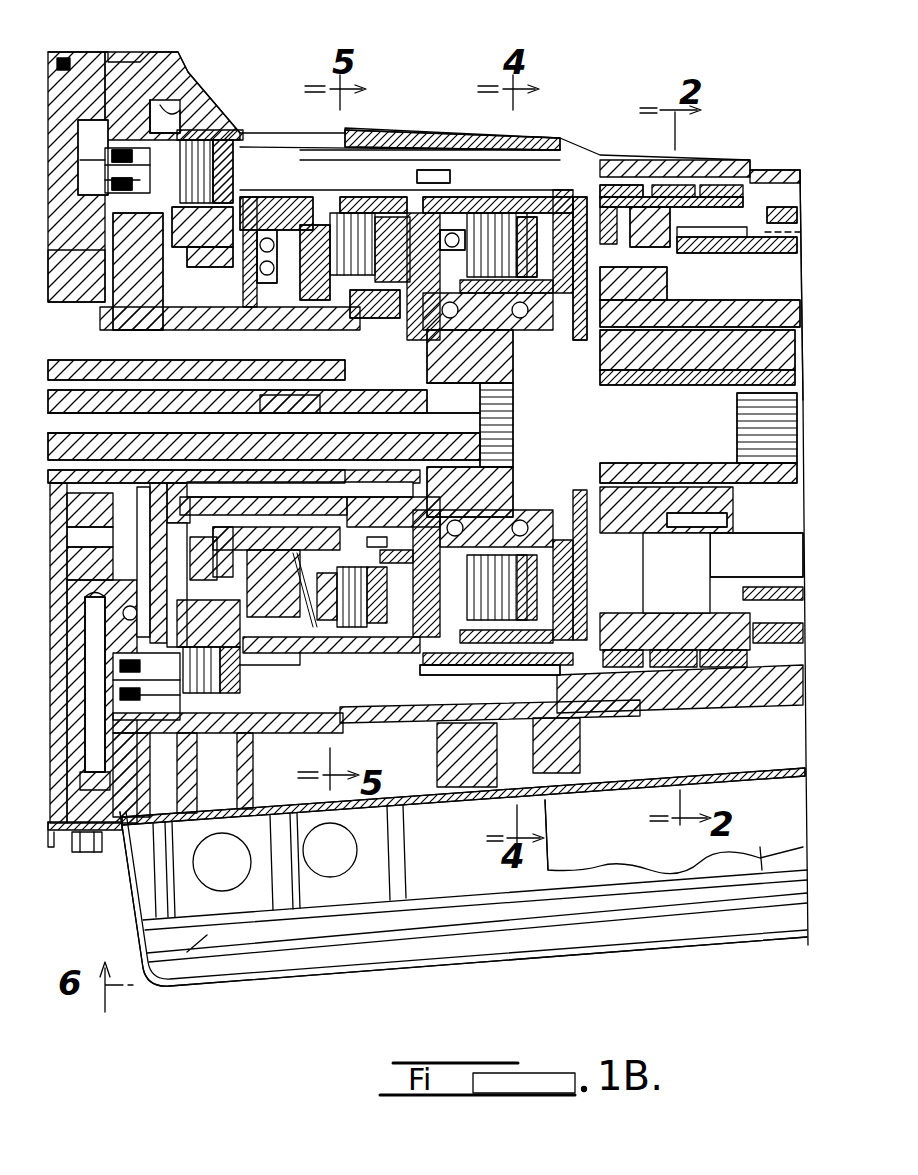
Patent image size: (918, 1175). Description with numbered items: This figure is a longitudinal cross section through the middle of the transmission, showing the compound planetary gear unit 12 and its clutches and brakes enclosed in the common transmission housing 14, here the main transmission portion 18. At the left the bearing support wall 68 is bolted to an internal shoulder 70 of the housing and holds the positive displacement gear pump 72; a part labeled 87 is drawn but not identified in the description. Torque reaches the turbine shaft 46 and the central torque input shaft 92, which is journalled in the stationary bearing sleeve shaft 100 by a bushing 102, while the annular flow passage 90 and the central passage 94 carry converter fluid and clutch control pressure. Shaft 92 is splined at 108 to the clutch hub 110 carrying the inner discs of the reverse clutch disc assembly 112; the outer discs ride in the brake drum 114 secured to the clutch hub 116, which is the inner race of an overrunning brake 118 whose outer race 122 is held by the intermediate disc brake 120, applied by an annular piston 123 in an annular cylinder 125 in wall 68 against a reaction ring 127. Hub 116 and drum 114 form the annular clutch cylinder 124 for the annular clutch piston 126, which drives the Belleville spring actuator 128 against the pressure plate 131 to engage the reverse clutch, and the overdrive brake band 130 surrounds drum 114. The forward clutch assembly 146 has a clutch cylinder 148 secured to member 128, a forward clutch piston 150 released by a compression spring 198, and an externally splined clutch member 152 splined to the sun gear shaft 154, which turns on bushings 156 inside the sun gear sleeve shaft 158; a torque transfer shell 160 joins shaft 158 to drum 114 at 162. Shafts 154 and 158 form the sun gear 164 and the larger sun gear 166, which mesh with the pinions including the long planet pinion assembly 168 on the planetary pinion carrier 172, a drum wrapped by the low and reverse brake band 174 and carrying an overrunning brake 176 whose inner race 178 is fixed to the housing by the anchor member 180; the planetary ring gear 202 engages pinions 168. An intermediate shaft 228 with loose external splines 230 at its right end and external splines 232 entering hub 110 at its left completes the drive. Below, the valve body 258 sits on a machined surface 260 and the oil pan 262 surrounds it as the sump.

The compound planetary gear unit 12 is at (765, 205).
The transmission housing 14 is at (403, 127).
The main transmission portion 18 is at (798, 168).
The turbine shaft 46 is at (92, 430).
The bearing support wall 68 is at (95, 150).
The internal shoulder 70 is at (105, 55).
The positive displacement gear pump 72 is at (95, 540).
The housing wall 87 is at (100, 292).
The annular flow passage 90 is at (115, 395).
The central torque input shaft 92 is at (290, 408).
The central passage 94 is at (320, 428).
The stationary bearing sleeve shaft 100 is at (225, 380).
The bushing 102 is at (300, 390).
The spline 108 is at (480, 380).
The clutch hub 110 is at (500, 385).
The reverse clutch disc assembly 112 is at (320, 235).
The brake drum 114 is at (330, 150).
The clutch hub 116 is at (290, 350).
The overrunning brake 118 is at (200, 258).
The intermediate disc brake 120 is at (163, 128).
The outer race 122 is at (190, 222).
The annular piston 123 is at (112, 162).
The annular clutch cylinder 124 is at (262, 215).
The annular cylinder 125 is at (112, 186).
The annular clutch piston 126 is at (210, 330).
The reaction ring 127 is at (228, 150).
The Belleville spring actuator 128 is at (295, 275).
The overdrive brake band 130 is at (358, 197).
The pressure plate 131 is at (365, 300).
The forward clutch assembly 146 is at (580, 195).
The clutch cylinder 148 is at (450, 225).
The forward clutch piston 150 is at (430, 215).
The externally splined clutch member 152 is at (540, 278).
The sun gear shaft 154 is at (610, 385).
The bushings 156 is at (575, 375).
The sun gear sleeve shaft 158 is at (640, 365).
The torque transfer shell 160 is at (610, 197).
The driving connection 162 is at (432, 170).
The sun gear 164 is at (785, 500).
The sun gear 166 is at (690, 513).
The long planet pinion assembly 168 is at (710, 240).
The planetary pinion carrier 172 is at (660, 225).
The low and reverse brake band 174 is at (630, 185).
The overrunning brake 176 is at (635, 272).
The inner race 178 is at (630, 290).
The overrunning brake anchor member 180 is at (570, 190).
The compression spring 198 is at (440, 630).
The planetary ring gear 202 is at (765, 238).
The intermediate shaft 228 is at (630, 470).
The external splines 230 is at (740, 415).
The external splines 232 is at (490, 470).
The valve body 258 is at (622, 850).
The machined surface 260 is at (460, 800).
The oil pan 262 is at (290, 980).